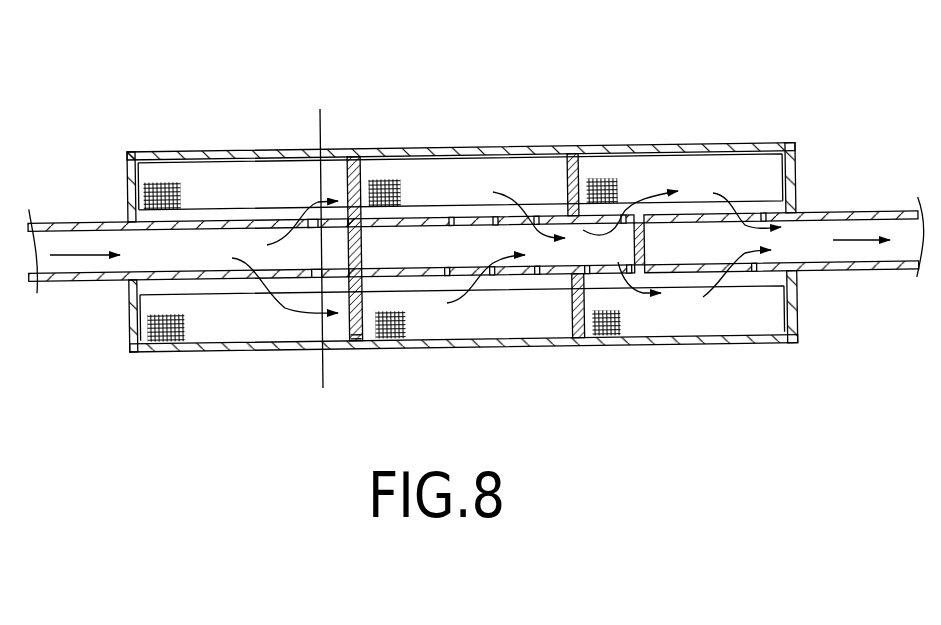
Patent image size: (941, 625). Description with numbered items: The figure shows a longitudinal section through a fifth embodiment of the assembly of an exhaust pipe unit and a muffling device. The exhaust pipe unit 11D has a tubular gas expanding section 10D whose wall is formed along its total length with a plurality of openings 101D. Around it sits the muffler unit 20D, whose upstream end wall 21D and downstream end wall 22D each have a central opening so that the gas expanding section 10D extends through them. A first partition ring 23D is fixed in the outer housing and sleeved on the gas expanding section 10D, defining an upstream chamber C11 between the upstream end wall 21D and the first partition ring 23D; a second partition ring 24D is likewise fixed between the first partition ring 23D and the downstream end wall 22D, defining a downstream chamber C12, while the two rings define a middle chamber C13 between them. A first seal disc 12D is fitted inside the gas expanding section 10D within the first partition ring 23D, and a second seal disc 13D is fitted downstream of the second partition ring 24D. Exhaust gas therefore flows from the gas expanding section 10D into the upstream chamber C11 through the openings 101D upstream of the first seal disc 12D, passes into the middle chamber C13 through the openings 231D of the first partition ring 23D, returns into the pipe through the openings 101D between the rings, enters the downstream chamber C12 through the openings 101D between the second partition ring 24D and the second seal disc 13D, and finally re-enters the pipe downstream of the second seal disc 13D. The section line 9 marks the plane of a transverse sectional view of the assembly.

The tubular gas expanding section 10D is at (90, 283).
The first pipe section 11D is at (222, 270).
The first seal disc 12D is at (367, 248).
The second seal disc 13D is at (645, 247).
The openings 101D is at (443, 217).
The muffler unit 20D is at (553, 141).
The upstream end wall 21D is at (127, 185).
The downstream end wall 22D is at (797, 190).
The first partition ring 23D is at (347, 180).
The openings of the first partition ring 231D is at (368, 337).
The second partition ring 24D is at (553, 167).
The upstream chamber C11 is at (224, 182).
The downstream chamber C12 is at (738, 168).
The middle chamber C13 is at (502, 167).
The section line 9- 9 is at (320, 109).